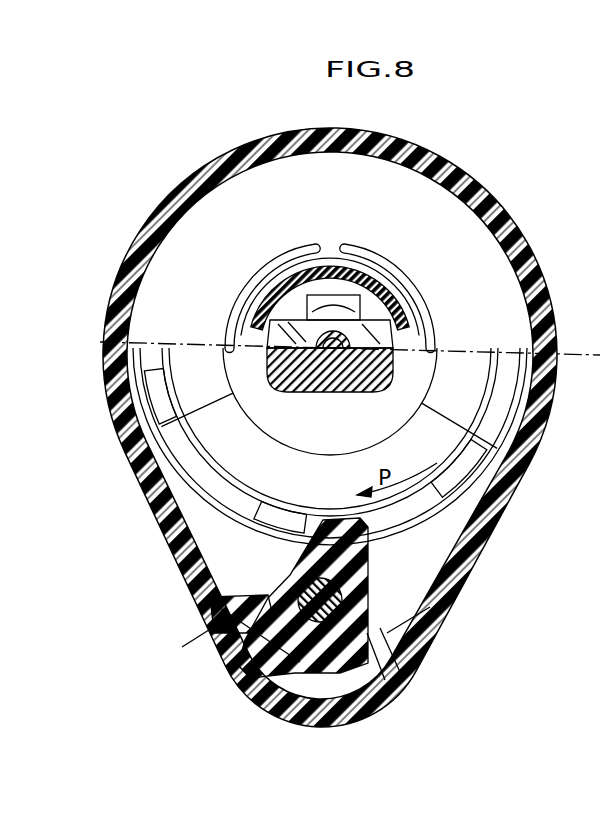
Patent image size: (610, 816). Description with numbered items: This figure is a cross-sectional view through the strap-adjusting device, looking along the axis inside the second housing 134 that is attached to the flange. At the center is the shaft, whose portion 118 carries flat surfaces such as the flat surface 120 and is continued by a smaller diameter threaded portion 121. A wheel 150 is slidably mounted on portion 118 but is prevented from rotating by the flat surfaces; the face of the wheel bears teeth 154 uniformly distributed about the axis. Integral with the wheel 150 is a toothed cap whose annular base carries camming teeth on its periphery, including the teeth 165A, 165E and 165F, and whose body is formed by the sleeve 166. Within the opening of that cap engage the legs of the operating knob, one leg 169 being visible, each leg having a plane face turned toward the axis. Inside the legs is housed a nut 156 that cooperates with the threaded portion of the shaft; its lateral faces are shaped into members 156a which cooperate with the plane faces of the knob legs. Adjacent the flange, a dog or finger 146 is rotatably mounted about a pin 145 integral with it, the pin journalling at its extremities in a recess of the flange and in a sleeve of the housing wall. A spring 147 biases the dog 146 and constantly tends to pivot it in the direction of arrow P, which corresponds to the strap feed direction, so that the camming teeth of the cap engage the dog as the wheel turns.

The second housing 134 is at (182, 185).
The sleeve 166 is at (311, 246).
The leg 169 is at (342, 300).
The threaded portion 121 is at (305, 336).
The member of nut 156a is at (365, 340).
The nut 156 is at (402, 340).
The portion of shaft 118 is at (302, 372).
The flat surface 120 is at (340, 388).
The teeth 154 is at (478, 403).
The tooth 165E is at (157, 407).
The wheel 150 is at (262, 455).
The tooth 165A is at (463, 475).
The tooth 165F is at (283, 522).
The dog or finger 146 is at (255, 612).
The spring 147 is at (413, 607).
The pin 145 is at (262, 700).